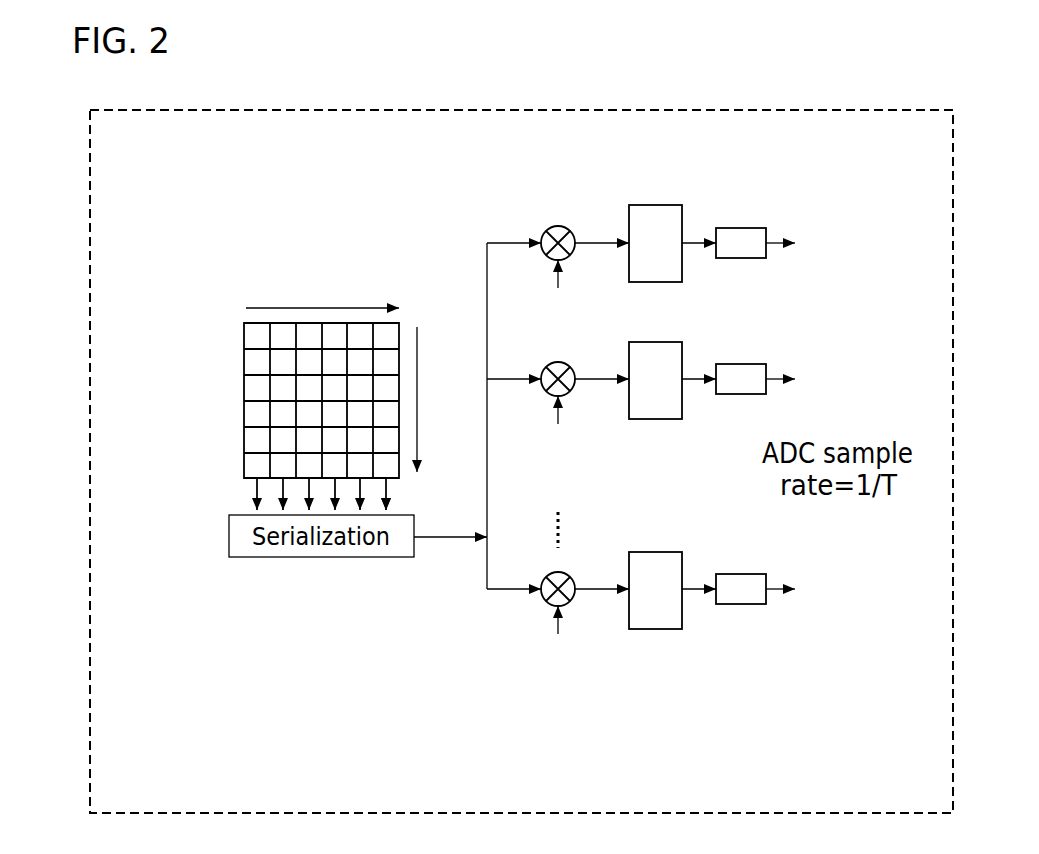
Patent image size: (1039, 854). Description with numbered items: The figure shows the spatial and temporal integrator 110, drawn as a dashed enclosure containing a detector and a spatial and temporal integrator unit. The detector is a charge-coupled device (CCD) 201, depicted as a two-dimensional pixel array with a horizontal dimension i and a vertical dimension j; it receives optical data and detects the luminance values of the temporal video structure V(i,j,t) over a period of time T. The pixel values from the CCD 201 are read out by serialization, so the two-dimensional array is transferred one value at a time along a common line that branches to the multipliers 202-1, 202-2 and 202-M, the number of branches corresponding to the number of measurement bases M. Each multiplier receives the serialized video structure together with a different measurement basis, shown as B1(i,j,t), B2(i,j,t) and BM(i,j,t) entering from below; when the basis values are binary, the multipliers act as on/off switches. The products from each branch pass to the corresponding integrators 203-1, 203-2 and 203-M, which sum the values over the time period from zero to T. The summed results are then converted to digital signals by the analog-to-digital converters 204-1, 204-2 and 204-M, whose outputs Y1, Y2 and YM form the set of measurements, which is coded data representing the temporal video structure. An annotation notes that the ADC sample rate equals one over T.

The spatial and temporal integrator 110 is at (970, 158).
The charge-coupled device (CCD) 201 is at (240, 281).
The multiplier 202-1 is at (526, 223).
The multiplier 202-2 is at (525, 359).
The multiplier 202-M is at (528, 614).
The integrator 203-1 is at (628, 229).
The integrator 203-2 is at (628, 366).
The integrator 203-M is at (628, 579).
The analog-to-digital converter (ADC) 204-1 is at (755, 233).
The analog-to-digital converter (ADC) 204-2 is at (755, 364).
The analog-to-digital converter (ADC) 204-M is at (757, 577).